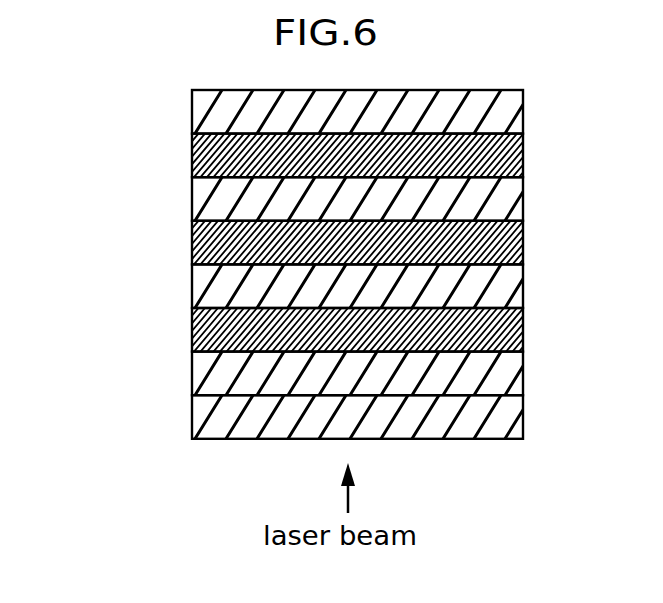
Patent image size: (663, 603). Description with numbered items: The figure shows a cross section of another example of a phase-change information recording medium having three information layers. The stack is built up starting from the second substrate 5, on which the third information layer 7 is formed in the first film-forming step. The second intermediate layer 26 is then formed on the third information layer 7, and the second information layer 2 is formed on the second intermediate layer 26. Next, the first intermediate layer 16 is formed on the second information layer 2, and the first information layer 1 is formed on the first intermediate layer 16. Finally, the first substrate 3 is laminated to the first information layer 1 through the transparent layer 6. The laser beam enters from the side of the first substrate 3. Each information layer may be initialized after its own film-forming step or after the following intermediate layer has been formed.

The first information layer 1 is at (192, 330).
The second information layer 2 is at (192, 240).
The first substrate 3 is at (205, 414).
The second substrate 5 is at (197, 112).
The transparent layer 6 is at (200, 373).
The third information layer 7 is at (197, 154).
The first intermediate layer 16 is at (197, 282).
The second intermediate layer 26 is at (197, 200).